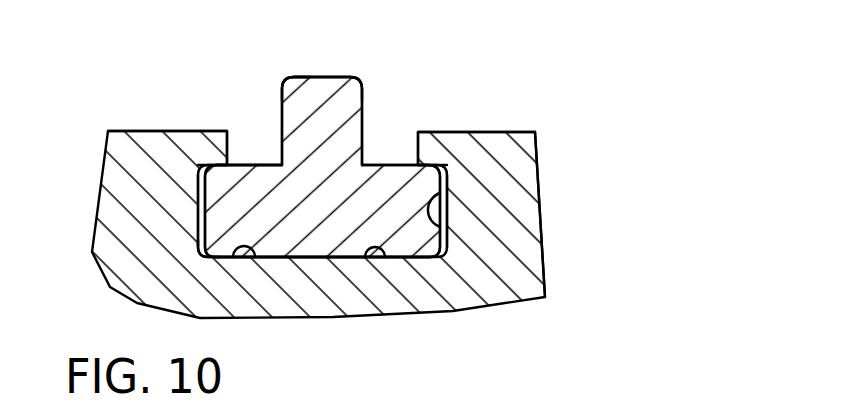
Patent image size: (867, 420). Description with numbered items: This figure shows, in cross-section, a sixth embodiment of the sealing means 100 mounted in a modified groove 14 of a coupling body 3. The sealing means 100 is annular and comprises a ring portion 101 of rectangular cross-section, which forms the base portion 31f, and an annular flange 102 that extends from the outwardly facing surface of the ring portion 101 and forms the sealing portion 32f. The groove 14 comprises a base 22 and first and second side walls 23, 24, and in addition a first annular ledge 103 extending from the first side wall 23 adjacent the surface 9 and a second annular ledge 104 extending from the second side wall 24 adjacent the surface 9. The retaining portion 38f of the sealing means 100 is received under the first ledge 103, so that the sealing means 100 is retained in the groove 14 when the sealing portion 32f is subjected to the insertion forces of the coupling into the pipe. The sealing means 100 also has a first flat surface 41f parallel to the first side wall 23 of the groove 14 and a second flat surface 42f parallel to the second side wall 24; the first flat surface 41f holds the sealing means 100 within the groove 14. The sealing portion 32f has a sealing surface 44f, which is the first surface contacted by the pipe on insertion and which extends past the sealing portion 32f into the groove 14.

The surface 9 is at (165, 131).
The housing body 3 is at (515, 164).
The sealing means 100 is at (345, 200).
The ring portion 101 is at (391, 208).
The annular flange 102 is at (341, 136).
The first annular ledge 103 is at (215, 142).
The second annular ledge 104 is at (433, 147).
The groove 14 is at (226, 258).
The base 22 is at (364, 253).
The first side wall 23 is at (206, 244).
The second side wall 24 is at (443, 230).
The base portion 31f is at (318, 228).
The sealing portion 32f is at (329, 112).
The retaining portion 38f is at (229, 176).
The first flat surface 41f is at (198, 191).
The second flat surface 42f is at (443, 232).
The sealing surface 44f is at (283, 88).